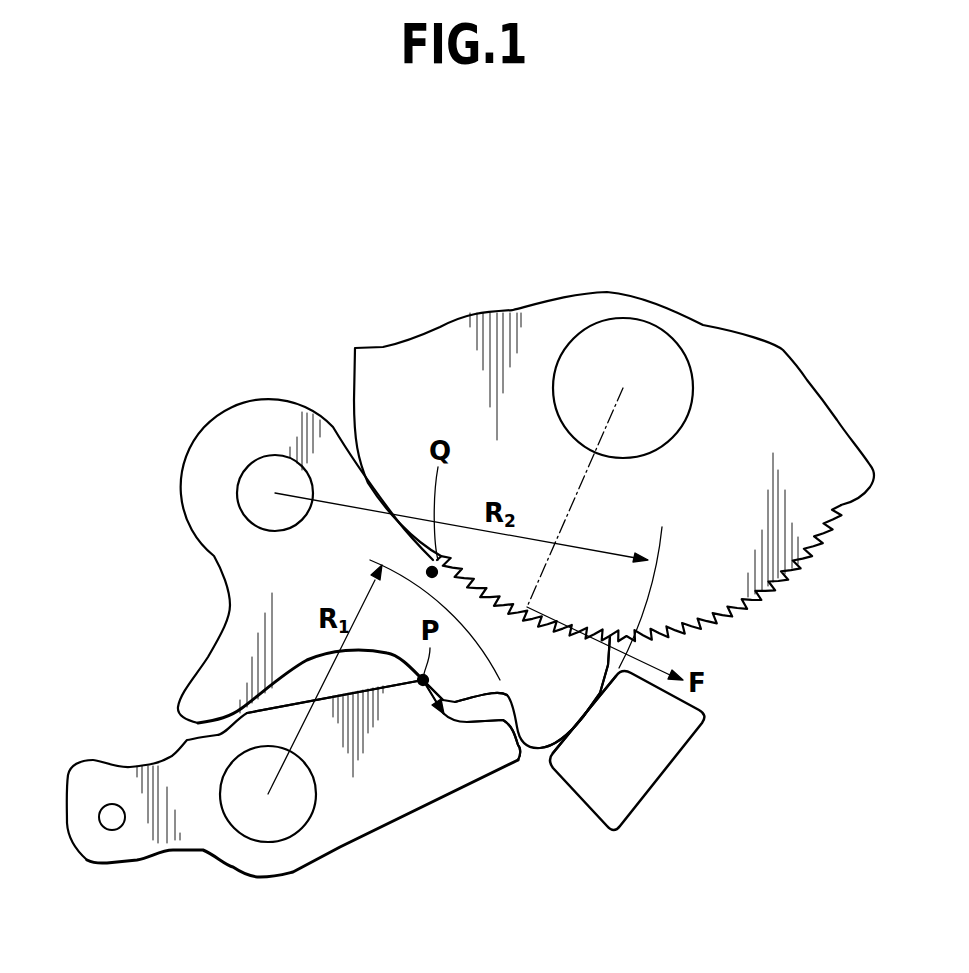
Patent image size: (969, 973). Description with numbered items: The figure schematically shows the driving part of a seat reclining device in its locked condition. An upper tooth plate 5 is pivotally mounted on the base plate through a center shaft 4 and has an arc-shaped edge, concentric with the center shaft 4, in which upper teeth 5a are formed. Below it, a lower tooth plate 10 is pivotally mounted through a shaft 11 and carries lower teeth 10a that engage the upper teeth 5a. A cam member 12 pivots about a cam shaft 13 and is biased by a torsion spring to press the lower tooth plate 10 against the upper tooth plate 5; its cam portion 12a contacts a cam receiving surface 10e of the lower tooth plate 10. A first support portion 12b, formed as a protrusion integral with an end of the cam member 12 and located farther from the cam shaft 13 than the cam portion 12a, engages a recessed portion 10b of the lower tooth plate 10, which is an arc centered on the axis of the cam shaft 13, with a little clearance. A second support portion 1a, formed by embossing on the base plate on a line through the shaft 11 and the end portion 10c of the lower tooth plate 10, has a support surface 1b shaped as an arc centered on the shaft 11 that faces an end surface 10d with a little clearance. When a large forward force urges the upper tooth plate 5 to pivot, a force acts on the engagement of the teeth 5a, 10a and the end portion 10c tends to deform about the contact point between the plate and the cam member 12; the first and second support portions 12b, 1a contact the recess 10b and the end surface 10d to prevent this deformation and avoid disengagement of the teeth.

The second support portion 1a is at (647, 750).
The support surface 1b is at (576, 706).
The center shaft 4 is at (647, 363).
The upper tooth plate 5 is at (435, 383).
The upper teeth 5a is at (730, 607).
The lower tooth plate 10 is at (240, 578).
The lower teeth 10a is at (585, 630).
The recessed portion 10b is at (495, 711).
The end portion 10c is at (583, 685).
The end surface 10d is at (588, 742).
The cam receiving surface 10e is at (443, 715).
The shaft 11 is at (268, 470).
The cam member 12 is at (360, 793).
The cam portion 12a is at (415, 700).
The first support portion 12b is at (513, 750).
The cam shaft 13 is at (253, 823).